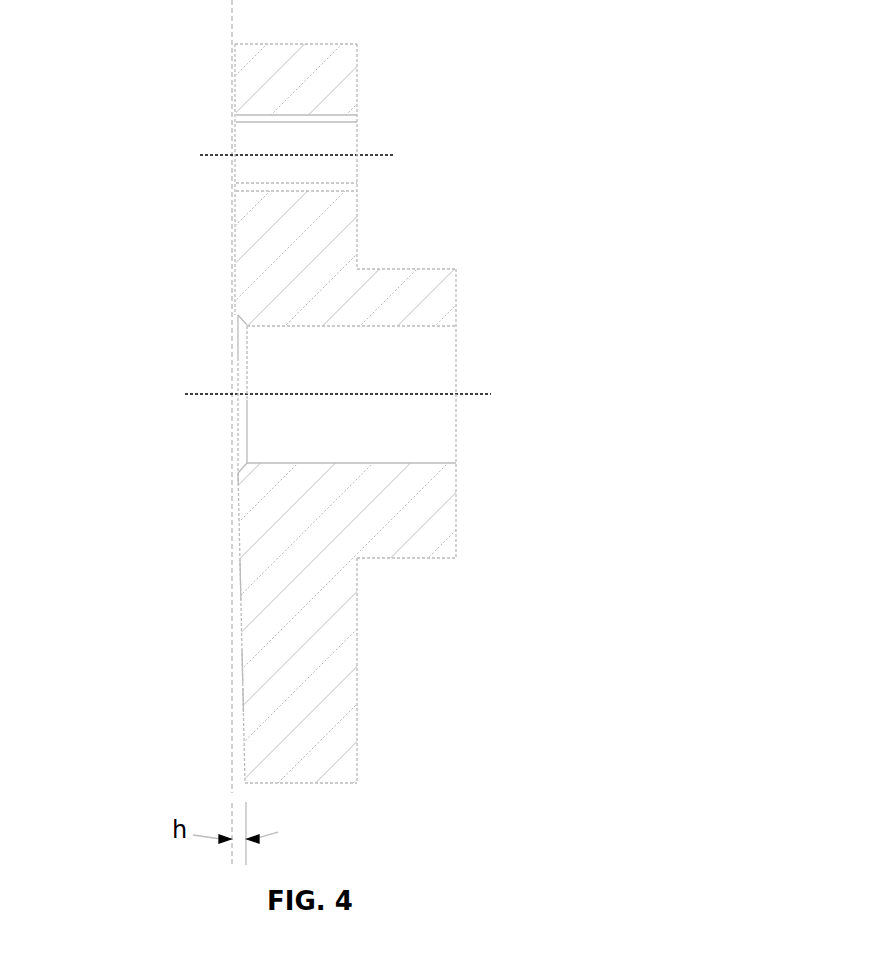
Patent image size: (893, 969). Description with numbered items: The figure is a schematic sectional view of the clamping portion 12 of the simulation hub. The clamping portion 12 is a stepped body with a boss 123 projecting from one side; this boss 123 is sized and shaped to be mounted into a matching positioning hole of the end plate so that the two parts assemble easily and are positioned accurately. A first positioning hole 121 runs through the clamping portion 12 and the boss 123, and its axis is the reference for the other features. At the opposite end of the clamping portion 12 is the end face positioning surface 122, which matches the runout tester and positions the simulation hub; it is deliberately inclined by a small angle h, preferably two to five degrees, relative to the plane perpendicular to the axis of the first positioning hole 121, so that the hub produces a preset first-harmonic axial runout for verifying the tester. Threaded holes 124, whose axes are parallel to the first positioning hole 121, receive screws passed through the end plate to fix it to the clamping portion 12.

The clamping portion 12 is at (319, 569).
The first positioning hole 121 is at (313, 422).
The end face positioning surface 122 is at (243, 690).
The boss 123 is at (438, 268).
The threaded holes 124 is at (338, 143).